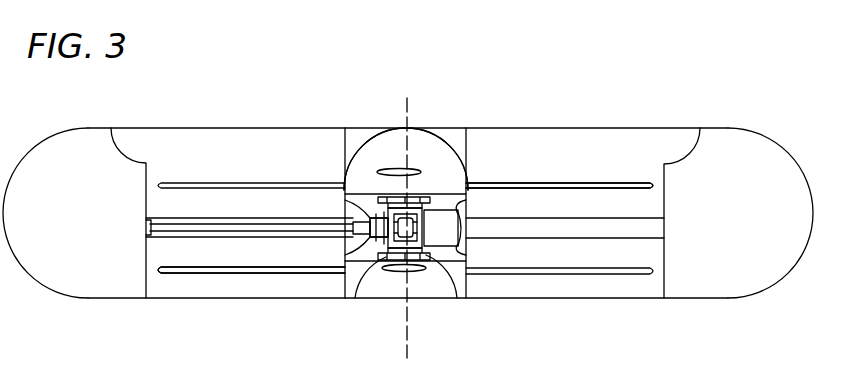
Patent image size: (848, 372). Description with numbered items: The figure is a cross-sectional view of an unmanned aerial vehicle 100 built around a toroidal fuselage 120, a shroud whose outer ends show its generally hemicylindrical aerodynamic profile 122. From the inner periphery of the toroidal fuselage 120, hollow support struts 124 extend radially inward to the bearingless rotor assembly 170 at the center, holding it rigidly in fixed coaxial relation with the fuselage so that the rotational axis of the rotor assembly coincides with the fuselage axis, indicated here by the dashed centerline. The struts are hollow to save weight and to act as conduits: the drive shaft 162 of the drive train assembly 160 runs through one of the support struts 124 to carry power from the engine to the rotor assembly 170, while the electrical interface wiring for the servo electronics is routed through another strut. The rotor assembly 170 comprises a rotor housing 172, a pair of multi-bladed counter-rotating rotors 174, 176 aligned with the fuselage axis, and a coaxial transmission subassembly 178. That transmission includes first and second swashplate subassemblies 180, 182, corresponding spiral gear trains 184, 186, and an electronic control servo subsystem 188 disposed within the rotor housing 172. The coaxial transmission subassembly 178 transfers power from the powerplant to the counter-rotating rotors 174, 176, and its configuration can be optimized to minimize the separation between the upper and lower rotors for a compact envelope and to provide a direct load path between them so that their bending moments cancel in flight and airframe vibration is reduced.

The unmanned aerial vehicle 100 is at (300, 75).
The toroidal fuselage 120 is at (408, 185).
The hemicylindrical aerodynamic profile 122 is at (781, 153).
The support struts 124 is at (212, 238).
The drive train assembly 160 is at (208, 210).
The drive shaft 162 is at (230, 225).
The rotor assembly 170 is at (420, 117).
The rotor housing 172 is at (437, 131).
The upper counter-rotating rotor 174 is at (578, 176).
The lower counter-rotating rotor 176 is at (256, 278).
The coaxial transmission subassembly 178 is at (370, 256).
The first swashplate subassembly 180 is at (388, 204).
The second swashplate subassembly 182 is at (411, 260).
The first gear train 184 is at (422, 196).
The second gear train 186 is at (436, 250).
The electronic control servo subsystem 188 is at (436, 222).